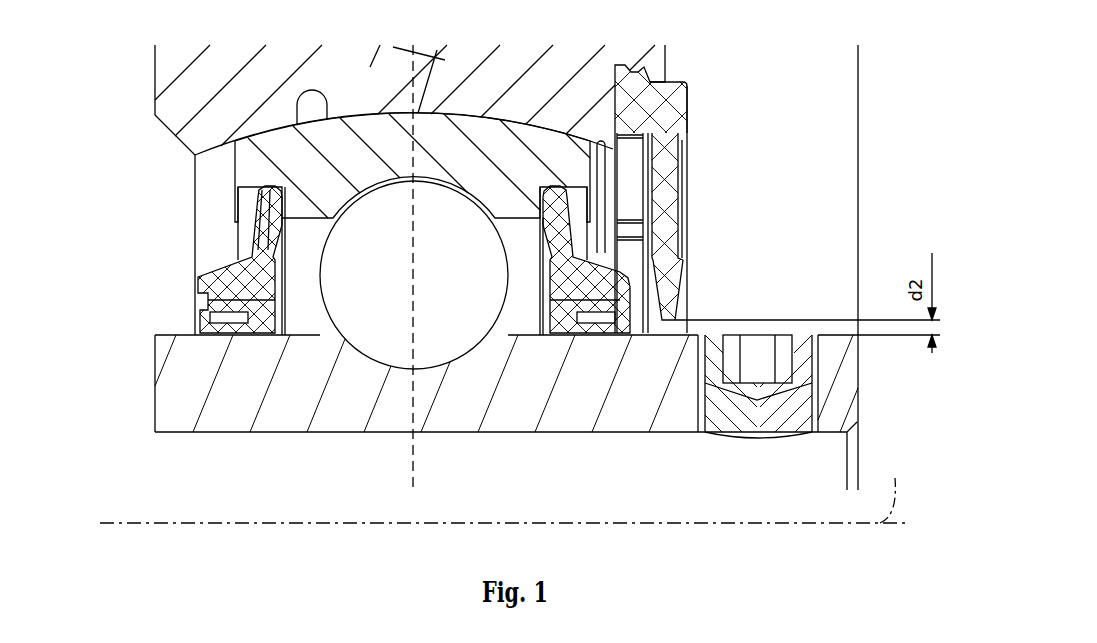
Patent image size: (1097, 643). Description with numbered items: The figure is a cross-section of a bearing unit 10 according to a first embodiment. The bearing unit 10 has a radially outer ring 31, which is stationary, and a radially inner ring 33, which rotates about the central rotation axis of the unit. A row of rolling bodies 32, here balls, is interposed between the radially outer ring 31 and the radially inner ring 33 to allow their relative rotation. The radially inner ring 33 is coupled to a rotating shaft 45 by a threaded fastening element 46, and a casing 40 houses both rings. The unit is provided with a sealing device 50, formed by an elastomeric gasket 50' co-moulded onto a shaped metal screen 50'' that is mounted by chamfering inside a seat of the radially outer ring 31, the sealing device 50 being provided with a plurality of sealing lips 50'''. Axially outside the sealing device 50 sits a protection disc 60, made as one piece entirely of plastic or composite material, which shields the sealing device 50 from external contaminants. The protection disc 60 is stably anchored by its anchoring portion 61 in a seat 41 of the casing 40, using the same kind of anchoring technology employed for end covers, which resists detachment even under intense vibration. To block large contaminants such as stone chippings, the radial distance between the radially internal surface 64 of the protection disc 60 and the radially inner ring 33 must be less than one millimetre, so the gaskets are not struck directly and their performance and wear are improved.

The bearing unit 10 is at (90, 117).
The radially outer ring 31 is at (520, 167).
The rolling bodies 32 is at (452, 317).
The radially inner ring 33 is at (233, 408).
The casing 40 is at (405, 190).
The seat 41 is at (620, 63).
The rotating shaft 45 is at (506, 408).
The threaded fastening element 46 is at (750, 367).
The sealing device 50 is at (379, 259).
The elastomeric gasket 50' is at (349, 282).
The shaped metal screen 50'' is at (205, 217).
The sealing lips 50''' is at (348, 324).
The protection disc 60 is at (703, 183).
The anchoring portion 61 is at (634, 85).
The radially internal surface 64 is at (677, 325).